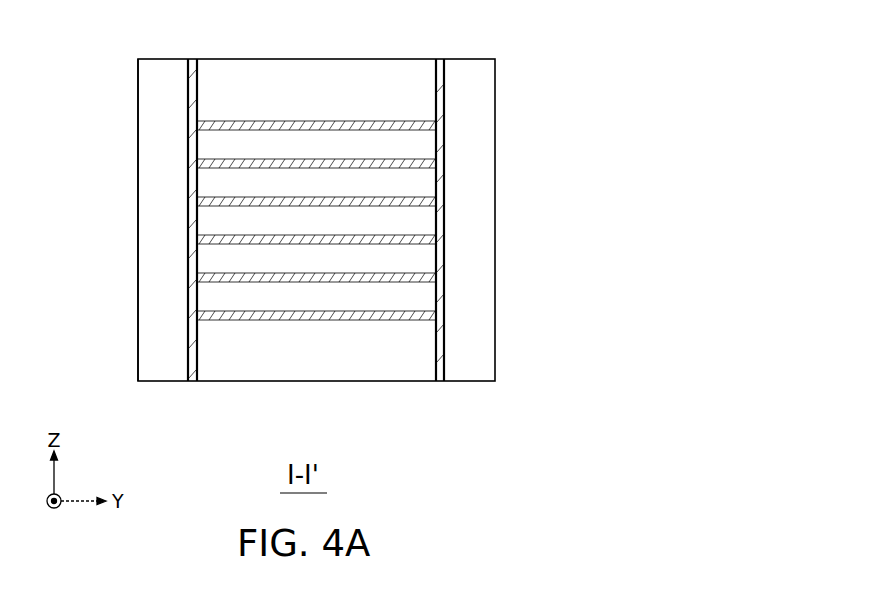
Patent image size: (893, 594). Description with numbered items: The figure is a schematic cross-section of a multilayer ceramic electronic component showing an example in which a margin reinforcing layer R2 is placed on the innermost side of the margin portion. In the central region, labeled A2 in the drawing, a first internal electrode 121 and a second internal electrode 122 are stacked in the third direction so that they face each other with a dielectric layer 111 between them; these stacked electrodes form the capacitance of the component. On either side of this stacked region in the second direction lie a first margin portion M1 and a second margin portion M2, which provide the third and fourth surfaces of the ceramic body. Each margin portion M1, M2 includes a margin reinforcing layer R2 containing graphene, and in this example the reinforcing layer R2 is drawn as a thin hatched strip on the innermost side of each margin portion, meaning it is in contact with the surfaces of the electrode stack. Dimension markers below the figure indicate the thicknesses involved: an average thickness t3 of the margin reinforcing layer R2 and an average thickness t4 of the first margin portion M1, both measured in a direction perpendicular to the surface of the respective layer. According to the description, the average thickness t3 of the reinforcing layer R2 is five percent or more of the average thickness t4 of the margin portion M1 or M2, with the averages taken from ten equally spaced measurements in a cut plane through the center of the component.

The first internal electrode 121 is at (435, 125).
The dielectric layer 111 is at (418, 143).
The second internal electrode 122 is at (427, 163).
The margin reinforcing layer R2 is at (441, 337).
The first margin portion M1 is at (197, 52).
The second margin portion M2 is at (495, 52).
The active region A2 is at (436, 52).
The average thickness of the margin reinforcing layer t3 is at (188, 381).
The average thickness of the margin portion t4 is at (138, 381).